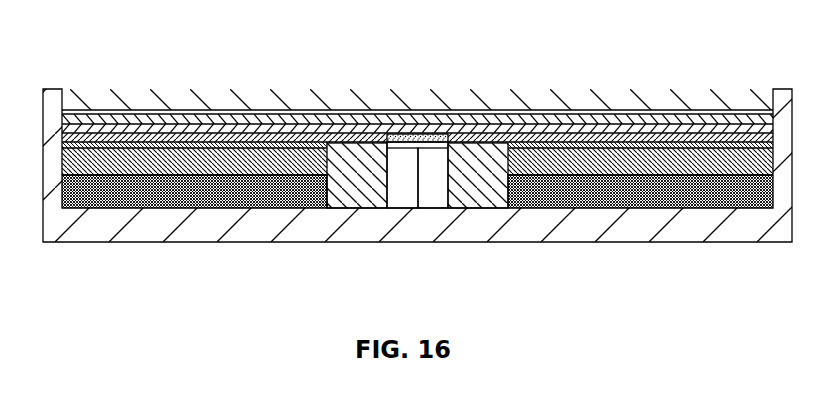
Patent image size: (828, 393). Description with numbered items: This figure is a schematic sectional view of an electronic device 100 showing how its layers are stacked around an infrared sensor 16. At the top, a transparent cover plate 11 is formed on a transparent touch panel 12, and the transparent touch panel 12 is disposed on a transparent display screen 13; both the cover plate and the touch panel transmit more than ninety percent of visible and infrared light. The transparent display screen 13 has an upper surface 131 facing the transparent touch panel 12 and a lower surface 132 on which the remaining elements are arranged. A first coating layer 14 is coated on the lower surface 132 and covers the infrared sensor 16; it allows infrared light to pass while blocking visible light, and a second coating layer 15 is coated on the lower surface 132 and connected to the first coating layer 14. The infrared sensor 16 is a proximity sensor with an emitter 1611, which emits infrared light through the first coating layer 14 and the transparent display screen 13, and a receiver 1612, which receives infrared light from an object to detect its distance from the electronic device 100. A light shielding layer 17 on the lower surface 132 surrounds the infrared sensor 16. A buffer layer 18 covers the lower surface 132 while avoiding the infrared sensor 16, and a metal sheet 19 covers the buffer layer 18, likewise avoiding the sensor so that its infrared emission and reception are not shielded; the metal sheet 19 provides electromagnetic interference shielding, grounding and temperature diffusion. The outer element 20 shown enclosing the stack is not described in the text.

The electronic device 100 is at (53, 40).
The transparent cover plate 11 is at (85, 103).
The transparent touch panel 12 is at (155, 127).
The transparent display screen 13 is at (417, 96).
The upper surface 131 is at (542, 116).
The lower surface 132 is at (615, 133).
The first coating layer 14 is at (422, 136).
The second coating layer 15 is at (323, 142).
The infrared sensor 16 is at (476, 225).
The emitter 1611 is at (432, 202).
The receiver 1612 is at (398, 190).
The light shielding layer 17 is at (490, 185).
The buffer layer 18 is at (150, 178).
The metal sheet 19 is at (252, 192).
The housing 20 is at (678, 222).